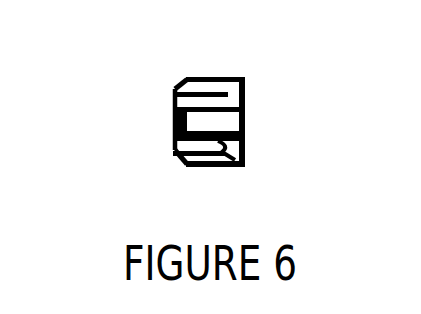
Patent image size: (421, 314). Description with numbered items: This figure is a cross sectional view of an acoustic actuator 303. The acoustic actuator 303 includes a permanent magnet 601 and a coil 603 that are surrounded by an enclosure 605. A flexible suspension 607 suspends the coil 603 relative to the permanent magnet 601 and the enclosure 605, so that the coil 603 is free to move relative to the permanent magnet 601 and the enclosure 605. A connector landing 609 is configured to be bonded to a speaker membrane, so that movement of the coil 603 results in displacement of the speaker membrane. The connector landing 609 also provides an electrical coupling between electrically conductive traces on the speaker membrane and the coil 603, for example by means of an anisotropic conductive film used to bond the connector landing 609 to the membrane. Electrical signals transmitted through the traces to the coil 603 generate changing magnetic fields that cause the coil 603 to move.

The acoustic actuator 303 is at (140, 116).
The permanent magnet 601 is at (244, 110).
The coil 603 is at (245, 161).
The enclosure 605 is at (228, 68).
The flexible suspension 607 is at (226, 77).
The connector landing 609 is at (180, 87).